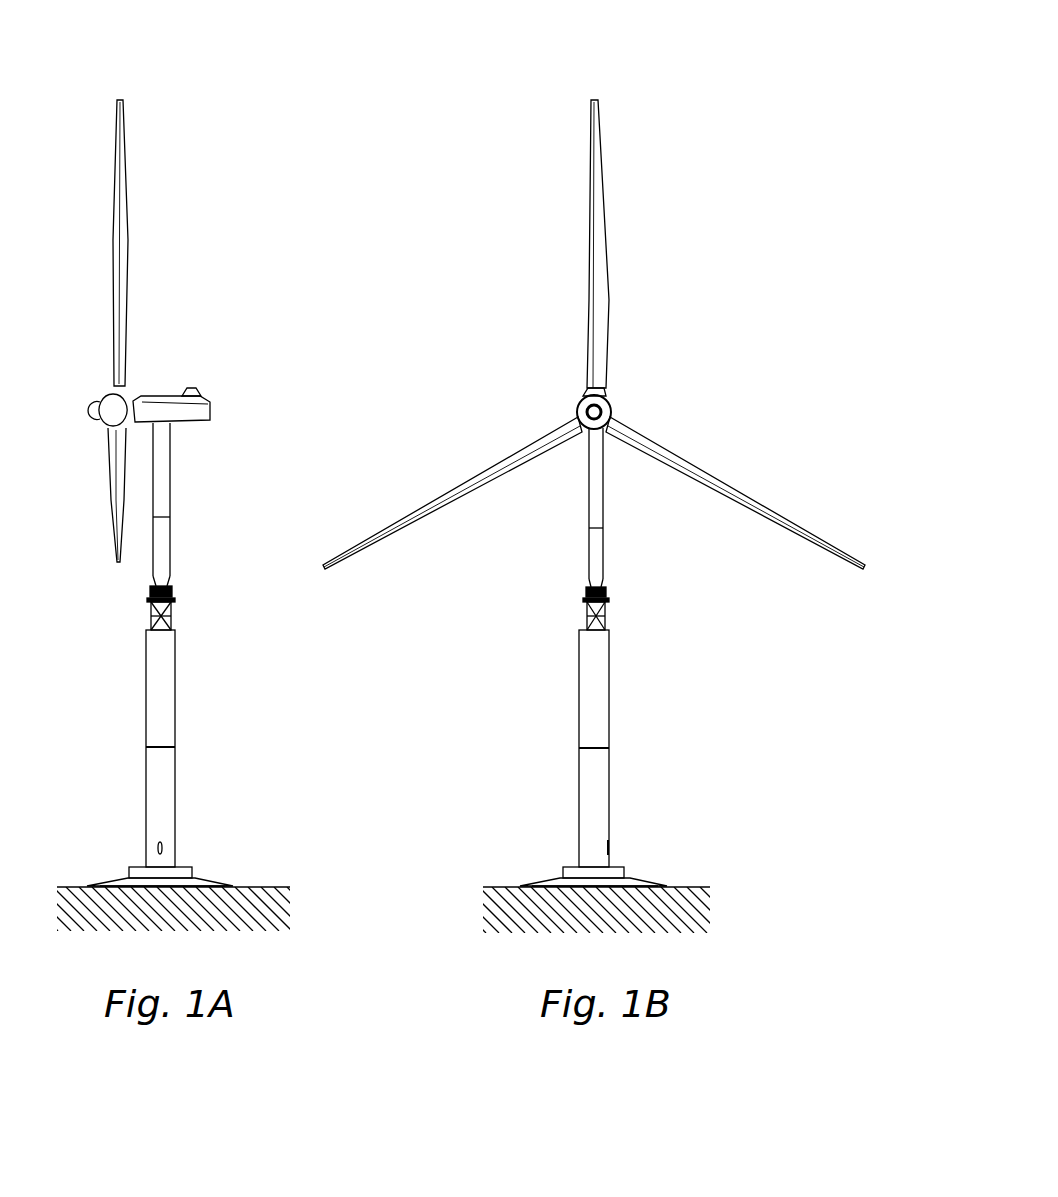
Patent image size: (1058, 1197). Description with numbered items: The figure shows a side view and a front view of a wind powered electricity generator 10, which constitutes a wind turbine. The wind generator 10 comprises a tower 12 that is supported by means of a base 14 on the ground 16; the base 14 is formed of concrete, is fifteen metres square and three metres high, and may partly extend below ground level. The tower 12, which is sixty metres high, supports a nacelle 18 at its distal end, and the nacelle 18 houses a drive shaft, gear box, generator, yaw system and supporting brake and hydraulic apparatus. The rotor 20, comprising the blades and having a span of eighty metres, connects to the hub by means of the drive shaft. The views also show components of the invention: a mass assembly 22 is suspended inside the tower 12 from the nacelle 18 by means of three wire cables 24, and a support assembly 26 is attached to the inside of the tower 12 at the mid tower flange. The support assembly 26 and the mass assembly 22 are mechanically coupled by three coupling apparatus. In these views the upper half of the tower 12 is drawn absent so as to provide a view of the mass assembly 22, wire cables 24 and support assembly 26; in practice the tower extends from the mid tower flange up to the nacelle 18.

In FIG. 1A, the wind powered electricity generator 10 is at (183, 110).
In FIG. 1B, the wind powered electricity generator 10 is at (697, 123).
In FIG. 1A, the tower 12 is at (163, 703).
In FIG. 1B, the tower 12 is at (598, 705).
In FIG. 1A, the base 14 is at (193, 879).
In FIG. 1B, the base 14 is at (632, 879).
In FIG. 1A, the ground 16 is at (77, 899).
In FIG. 1B, the ground 16 is at (503, 899).
In FIG. 1A, the nacelle 18 is at (190, 409).
In FIG. 1A, the rotor 20 is at (128, 252).
In FIG. 1B, the rotor 20 is at (600, 259).
In FIG. 1A, the mass assembly 22 is at (170, 592).
In FIG. 1B, the mass assembly 22 is at (606, 592).
In FIG. 1A, the wire cables 24 is at (156, 517).
In FIG. 1B, the wire cables 24 is at (603, 512).
In FIG. 1A, the support assembly 26 is at (172, 621).
In FIG. 1B, the support assembly 26 is at (608, 622).